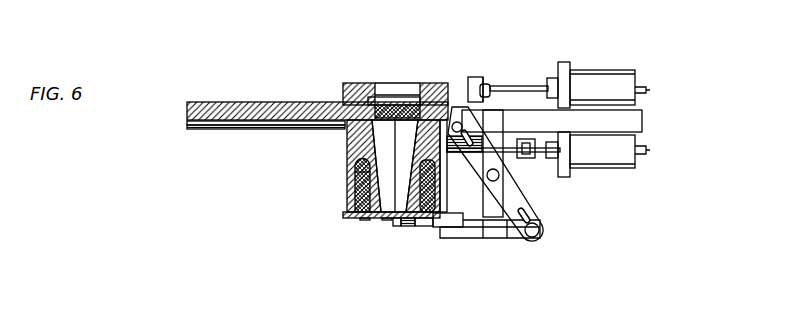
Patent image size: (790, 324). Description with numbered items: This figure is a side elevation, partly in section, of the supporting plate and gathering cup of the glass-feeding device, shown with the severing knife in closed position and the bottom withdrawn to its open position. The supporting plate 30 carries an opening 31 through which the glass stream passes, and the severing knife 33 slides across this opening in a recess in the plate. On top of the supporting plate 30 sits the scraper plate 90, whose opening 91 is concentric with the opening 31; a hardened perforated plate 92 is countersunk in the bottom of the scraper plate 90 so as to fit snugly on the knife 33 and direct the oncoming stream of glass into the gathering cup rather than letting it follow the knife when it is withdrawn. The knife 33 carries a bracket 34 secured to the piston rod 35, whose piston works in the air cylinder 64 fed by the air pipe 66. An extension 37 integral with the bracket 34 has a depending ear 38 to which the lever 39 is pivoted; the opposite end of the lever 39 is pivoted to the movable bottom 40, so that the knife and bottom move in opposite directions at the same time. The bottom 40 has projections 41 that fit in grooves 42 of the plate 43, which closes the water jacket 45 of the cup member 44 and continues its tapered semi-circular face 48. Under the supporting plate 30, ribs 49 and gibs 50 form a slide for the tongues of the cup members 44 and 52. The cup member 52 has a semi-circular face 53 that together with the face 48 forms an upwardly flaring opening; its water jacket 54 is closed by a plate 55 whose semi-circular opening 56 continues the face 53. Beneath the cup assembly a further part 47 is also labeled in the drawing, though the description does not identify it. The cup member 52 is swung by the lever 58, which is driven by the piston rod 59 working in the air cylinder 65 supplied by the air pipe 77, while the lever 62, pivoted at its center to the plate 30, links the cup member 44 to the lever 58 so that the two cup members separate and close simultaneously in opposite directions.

The supporting plate 30 is at (213, 102).
The ribs 49 is at (188, 122).
The gibs 50 is at (212, 129).
The scraper plate 90 is at (355, 77).
The opening 91 is at (343, 97).
The perforated plate 92 is at (343, 100).
The severing knife 33 is at (392, 105).
The opening 31 is at (410, 120).
The cup member 52 is at (347, 142).
The water jacket 54 is at (353, 164).
The semi-circular face 53 is at (355, 180).
The tapered semi-circular face 48 is at (400, 167).
The plate 55 is at (365, 219).
The semi-circular opening 56 is at (387, 219).
The member 47 is at (390, 225).
The water jacket 45 is at (413, 225).
The grooves 42 is at (420, 226).
The plate 43 is at (432, 228).
The projections 41 is at (480, 239).
The movable bottom 40 is at (455, 238).
The cup member 44 is at (441, 196).
The lever 62 is at (466, 152).
The lever 39 is at (523, 208).
The extension 37 is at (458, 107).
The depending ear 38 is at (470, 77).
The bracket 34 is at (484, 80).
The piston rod 35 is at (506, 86).
The lever 58 is at (513, 140).
The piston rod 59 is at (560, 153).
The air cylinder 64 is at (622, 72).
The air pipe 66 is at (651, 91).
The air cylinder 65 is at (637, 167).
The air pipe 77 is at (642, 151).